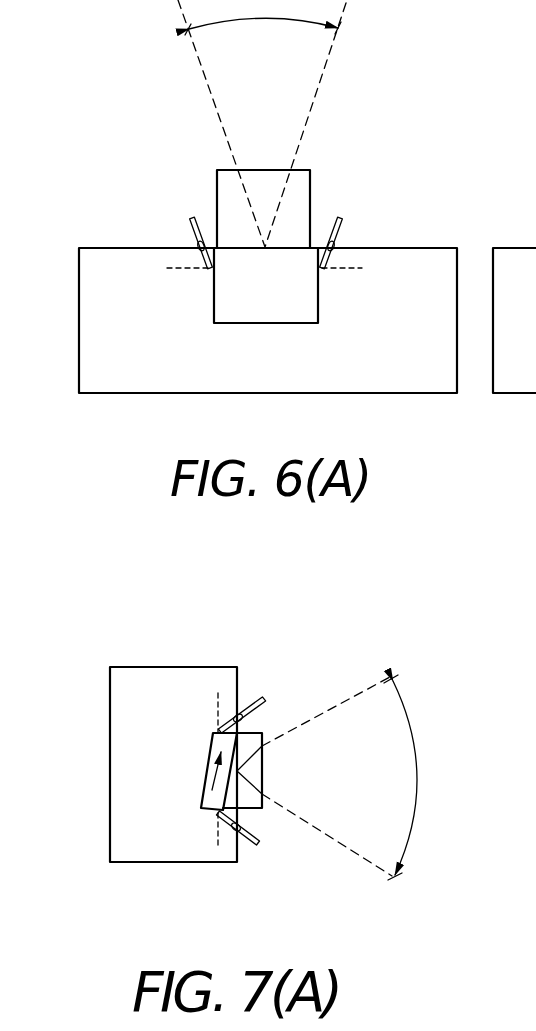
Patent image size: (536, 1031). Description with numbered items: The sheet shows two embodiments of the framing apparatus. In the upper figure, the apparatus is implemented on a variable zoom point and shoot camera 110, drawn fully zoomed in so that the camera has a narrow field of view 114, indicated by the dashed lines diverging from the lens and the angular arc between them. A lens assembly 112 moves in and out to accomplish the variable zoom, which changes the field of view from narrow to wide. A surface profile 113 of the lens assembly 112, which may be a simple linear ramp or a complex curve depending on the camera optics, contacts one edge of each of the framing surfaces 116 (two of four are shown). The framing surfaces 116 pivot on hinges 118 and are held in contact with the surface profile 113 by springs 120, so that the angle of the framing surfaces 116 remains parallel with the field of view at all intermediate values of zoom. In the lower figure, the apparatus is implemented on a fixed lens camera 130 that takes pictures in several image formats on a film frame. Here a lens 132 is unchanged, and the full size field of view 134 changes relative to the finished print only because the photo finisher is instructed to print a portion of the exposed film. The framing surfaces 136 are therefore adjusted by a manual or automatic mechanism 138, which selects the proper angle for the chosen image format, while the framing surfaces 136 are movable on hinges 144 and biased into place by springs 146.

In FIG. 6A, the variable zoom point and shoot camera 110 is at (127, 394).
In FIG. 6A, the lens assembly 112 is at (310, 190).
In FIG. 6A, the surface profile 113 is at (318, 237).
In FIG. 6A, the narrow field of view 114 is at (313, 100).
In FIG. 6A, the framing surface 116 is at (193, 218).
In FIG. 6A, the hinge 118 is at (197, 246).
In FIG. 6A, the spring 120 is at (167, 268).
In FIG. 7A, the fixed lens camera 130 is at (142, 864).
In FIG. 7A, the lens 132 is at (266, 808).
In FIG. 7A, the field of view 134 is at (372, 688).
In FIG. 7A, the framing surface 136 is at (264, 700).
In FIG. 7A, the manual or automatic mechanism 138 is at (212, 747).
In FIG. 7A, the hinge 144 is at (240, 848).
In FIG. 7A, the spring 146 is at (215, 837).